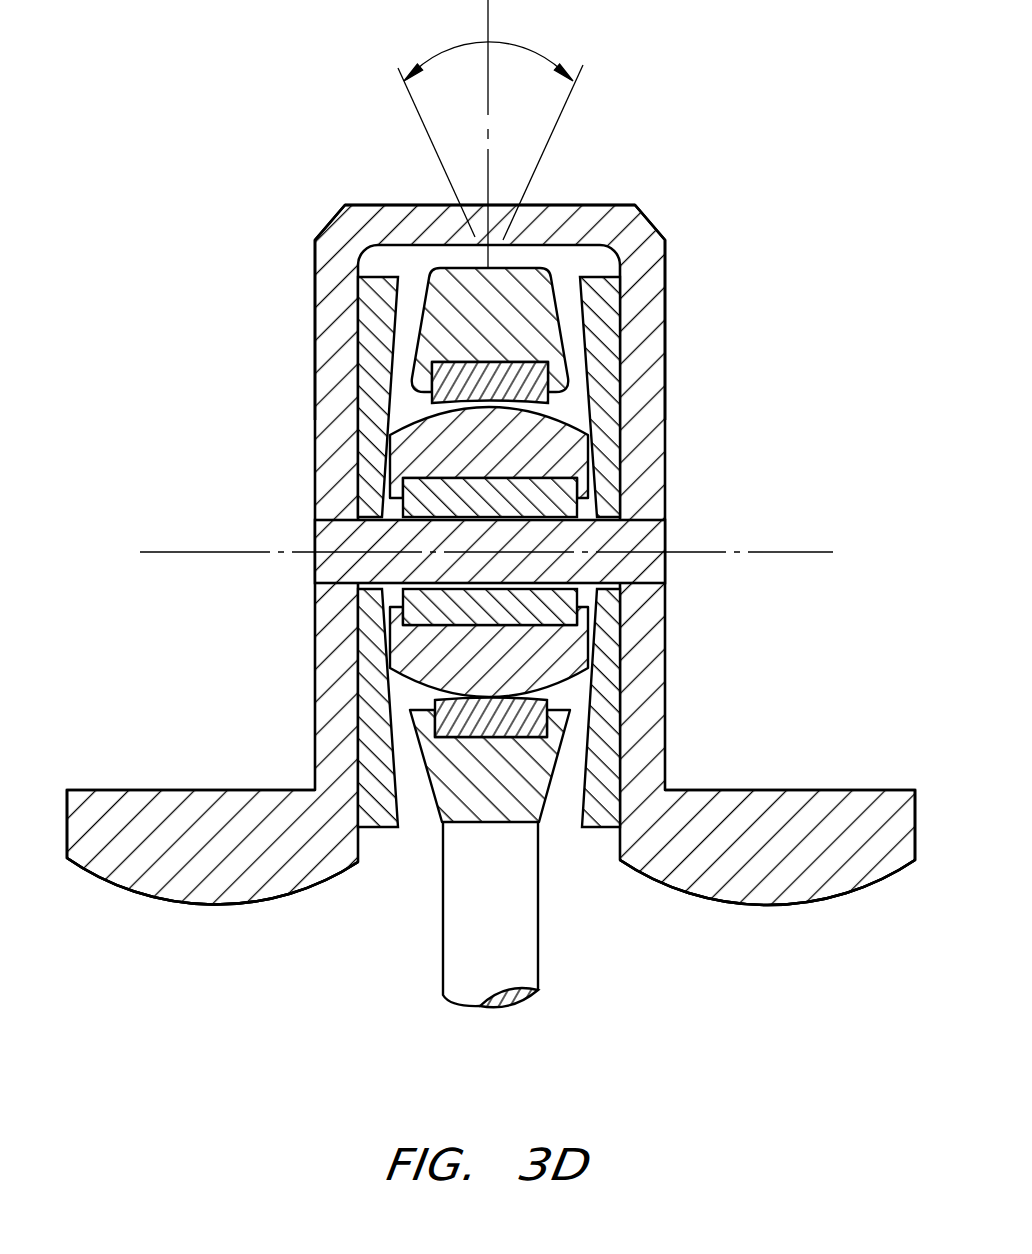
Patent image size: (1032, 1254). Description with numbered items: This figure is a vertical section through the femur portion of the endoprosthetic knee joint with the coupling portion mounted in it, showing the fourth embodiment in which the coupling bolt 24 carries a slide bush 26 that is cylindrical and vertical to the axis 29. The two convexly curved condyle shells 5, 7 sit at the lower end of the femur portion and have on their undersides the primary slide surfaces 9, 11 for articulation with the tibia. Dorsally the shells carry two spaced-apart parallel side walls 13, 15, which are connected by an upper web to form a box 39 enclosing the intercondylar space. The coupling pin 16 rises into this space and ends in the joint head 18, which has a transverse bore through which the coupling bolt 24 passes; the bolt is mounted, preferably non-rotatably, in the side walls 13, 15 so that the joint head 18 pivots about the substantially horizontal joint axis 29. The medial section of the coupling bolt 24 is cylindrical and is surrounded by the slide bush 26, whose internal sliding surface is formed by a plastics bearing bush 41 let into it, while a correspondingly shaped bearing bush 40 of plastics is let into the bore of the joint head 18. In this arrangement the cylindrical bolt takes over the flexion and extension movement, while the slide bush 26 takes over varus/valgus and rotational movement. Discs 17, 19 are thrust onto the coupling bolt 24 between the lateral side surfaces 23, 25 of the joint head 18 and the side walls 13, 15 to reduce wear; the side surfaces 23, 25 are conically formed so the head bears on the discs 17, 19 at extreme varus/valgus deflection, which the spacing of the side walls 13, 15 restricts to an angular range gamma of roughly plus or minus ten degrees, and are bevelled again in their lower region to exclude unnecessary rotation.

The condyle shell 5 is at (115, 855).
The condyle shell 7 is at (848, 860).
The primary slide surface 9 is at (223, 905).
The primary slide surface 11 is at (788, 905).
The side wall 13 is at (337, 678).
The side wall 15 is at (638, 263).
The coupling pin 16 is at (520, 902).
The disc 17 is at (370, 327).
The joint head 18 is at (513, 268).
The disc 19 is at (602, 342).
The side surface of the joint head 23 is at (437, 782).
The coupling bolt 24 is at (415, 525).
The side surface of the joint head 25 is at (558, 308).
The slide bush 26 is at (452, 435).
The joint axis 29 is at (822, 550).
The box 39 is at (422, 205).
The bearing bush 40 is at (443, 372).
The bearing bush 41 is at (447, 488).